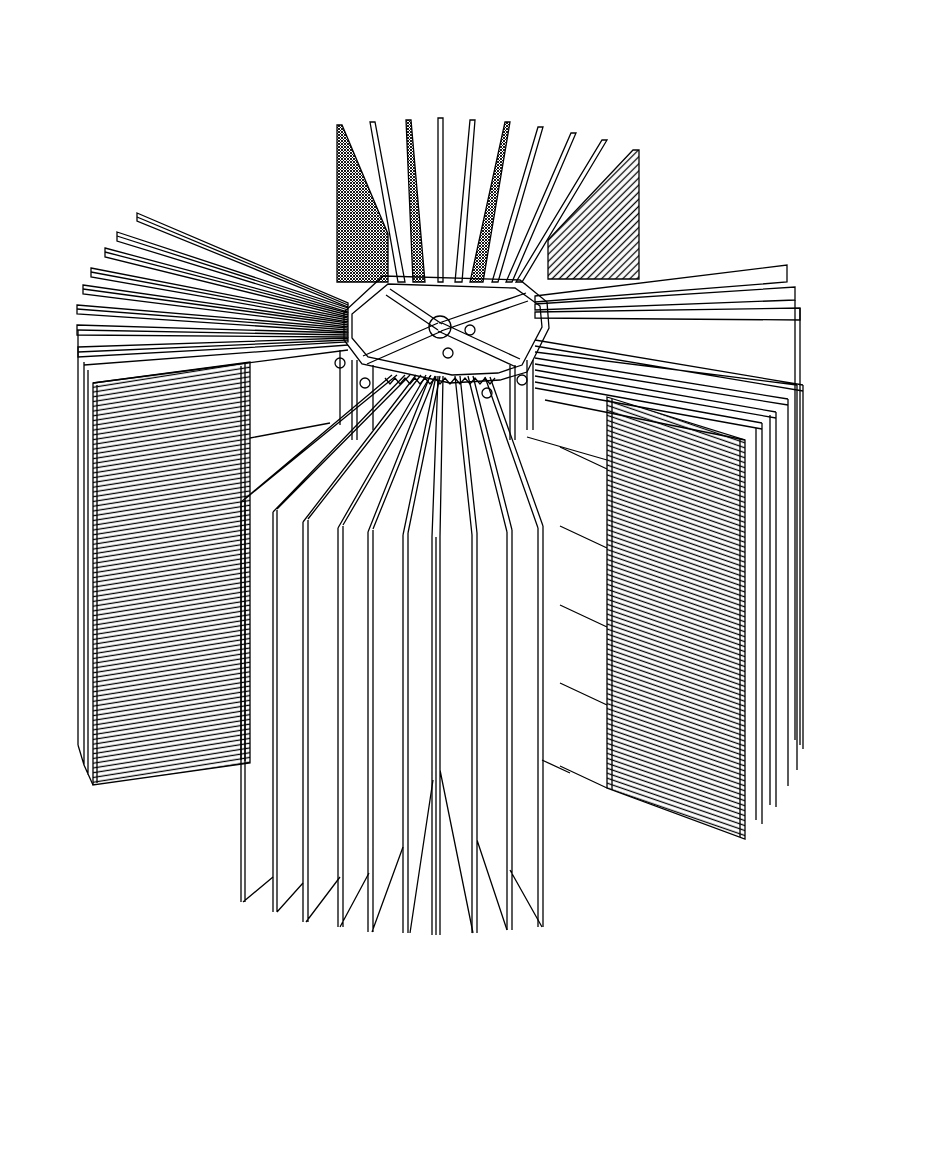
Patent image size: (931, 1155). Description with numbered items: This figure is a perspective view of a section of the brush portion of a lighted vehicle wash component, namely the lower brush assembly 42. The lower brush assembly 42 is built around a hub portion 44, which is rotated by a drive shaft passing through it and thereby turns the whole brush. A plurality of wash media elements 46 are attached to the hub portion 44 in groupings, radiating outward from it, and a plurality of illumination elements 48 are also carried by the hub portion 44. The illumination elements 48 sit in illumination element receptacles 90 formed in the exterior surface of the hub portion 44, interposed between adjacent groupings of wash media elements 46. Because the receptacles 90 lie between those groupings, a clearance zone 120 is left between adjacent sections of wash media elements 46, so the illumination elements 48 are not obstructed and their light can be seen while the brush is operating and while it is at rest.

The lower brush assembly 42 is at (457, 78).
The hub portion 44 is at (393, 257).
The wash media elements 46 is at (710, 522).
The illumination elements 48 is at (347, 340).
The illumination element receptacles 90 is at (540, 292).
The clearance zone 120 is at (652, 208).